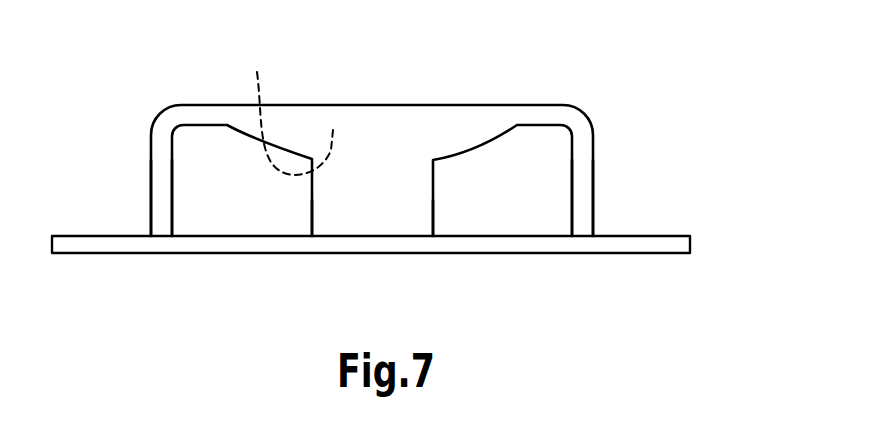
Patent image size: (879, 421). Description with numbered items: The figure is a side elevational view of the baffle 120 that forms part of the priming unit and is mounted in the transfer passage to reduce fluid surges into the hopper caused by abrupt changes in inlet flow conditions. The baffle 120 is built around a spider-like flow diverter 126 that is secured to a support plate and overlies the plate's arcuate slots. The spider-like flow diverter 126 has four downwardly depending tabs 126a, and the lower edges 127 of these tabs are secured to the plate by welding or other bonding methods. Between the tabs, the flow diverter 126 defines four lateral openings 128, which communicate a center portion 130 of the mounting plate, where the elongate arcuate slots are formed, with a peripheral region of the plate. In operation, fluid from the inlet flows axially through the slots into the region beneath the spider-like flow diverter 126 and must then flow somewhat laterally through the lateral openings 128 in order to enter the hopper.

The baffle 120 is at (652, 98).
The spider-like flow diverter 126 is at (418, 105).
The downwardly depending tabs 126a is at (149, 188).
The lower edges 127 is at (162, 236).
The lateral openings 128 is at (253, 201).
The center portion 130 is at (284, 106).